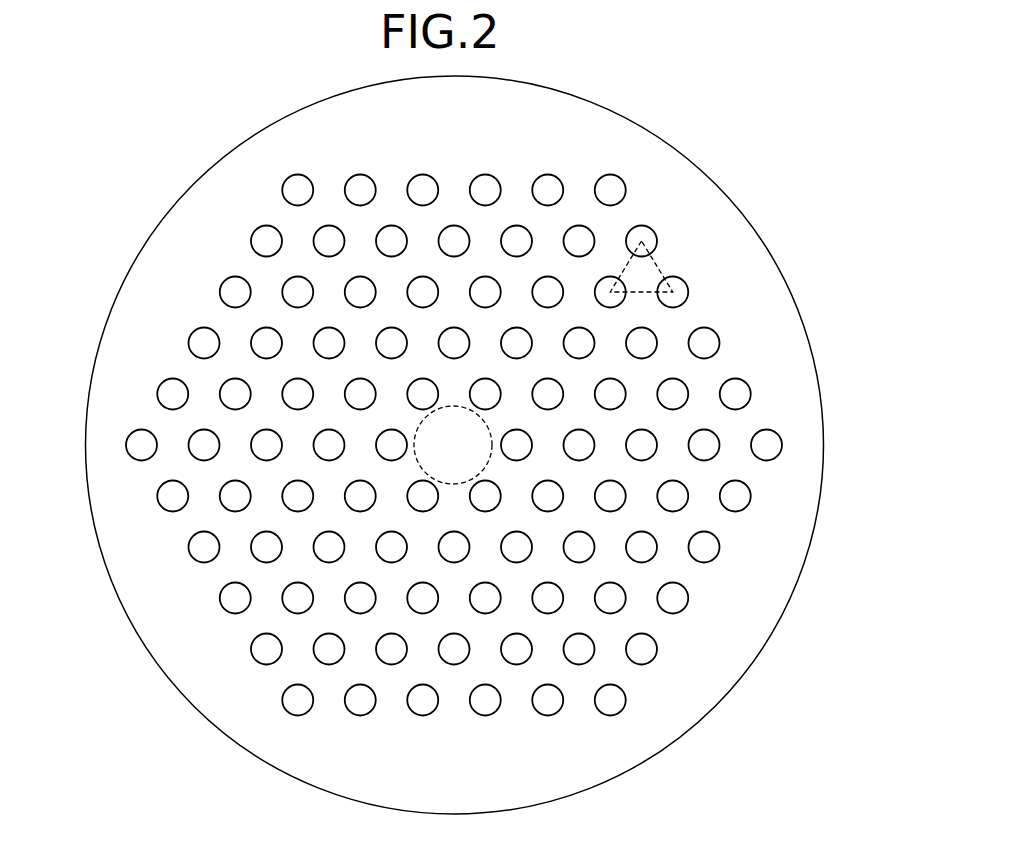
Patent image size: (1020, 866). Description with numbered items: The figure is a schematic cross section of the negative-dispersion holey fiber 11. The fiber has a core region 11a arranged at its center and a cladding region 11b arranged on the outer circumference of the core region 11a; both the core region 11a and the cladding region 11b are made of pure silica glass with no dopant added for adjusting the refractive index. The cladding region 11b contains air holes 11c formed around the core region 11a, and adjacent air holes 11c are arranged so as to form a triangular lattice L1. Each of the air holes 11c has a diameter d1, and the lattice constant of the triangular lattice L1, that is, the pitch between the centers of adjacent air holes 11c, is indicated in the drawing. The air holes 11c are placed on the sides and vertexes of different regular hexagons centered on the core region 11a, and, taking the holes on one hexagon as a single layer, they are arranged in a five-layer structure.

The negative-dispersion holey fiber 11 is at (488, 445).
The core region 11a is at (452, 487).
The cladding region 11b is at (687, 700).
The air holes 11c is at (781, 434).
The diameter of air hole d1 is at (650, 215).
The triangular lattice L1 is at (642, 294).